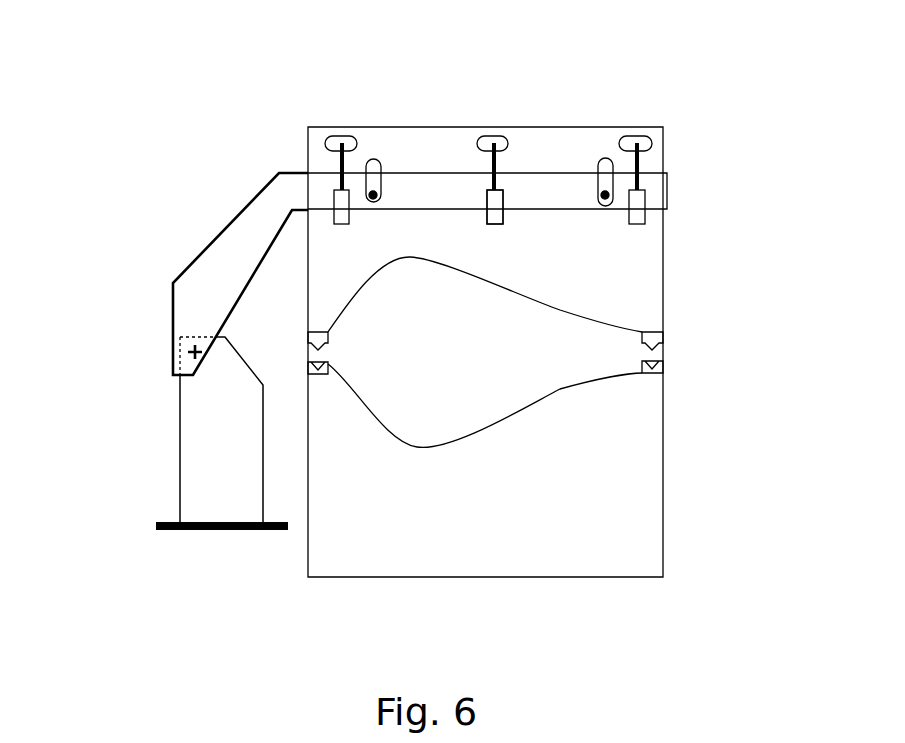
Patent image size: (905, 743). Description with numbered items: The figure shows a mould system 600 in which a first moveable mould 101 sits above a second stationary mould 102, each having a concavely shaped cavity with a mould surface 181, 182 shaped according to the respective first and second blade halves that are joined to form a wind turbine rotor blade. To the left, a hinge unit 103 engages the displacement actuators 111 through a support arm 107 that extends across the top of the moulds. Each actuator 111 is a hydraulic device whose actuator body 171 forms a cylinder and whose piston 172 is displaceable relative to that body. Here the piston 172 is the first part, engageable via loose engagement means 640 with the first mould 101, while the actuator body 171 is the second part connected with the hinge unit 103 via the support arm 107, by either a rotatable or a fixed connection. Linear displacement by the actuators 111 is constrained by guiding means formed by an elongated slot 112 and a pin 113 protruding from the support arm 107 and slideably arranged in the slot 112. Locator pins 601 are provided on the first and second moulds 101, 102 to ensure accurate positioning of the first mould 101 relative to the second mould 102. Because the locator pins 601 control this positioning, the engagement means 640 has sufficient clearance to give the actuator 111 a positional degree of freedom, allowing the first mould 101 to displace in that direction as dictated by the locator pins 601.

The mould system 600 is at (112, 93).
The first moveable mould 101 is at (303, 145).
The second stationary mould 102 is at (302, 572).
The hinge unit 103 is at (177, 250).
The support arm 107 is at (670, 187).
The displacement actuator 111 is at (505, 228).
The elongated slot 112 is at (375, 175).
The pin 113 is at (372, 200).
The actuator body 171 is at (495, 215).
The piston 172 is at (497, 163).
The mould surface 181 is at (401, 263).
The mould surface 182 is at (492, 415).
The locator pins 601 is at (664, 363).
The engagement means 640 is at (334, 141).